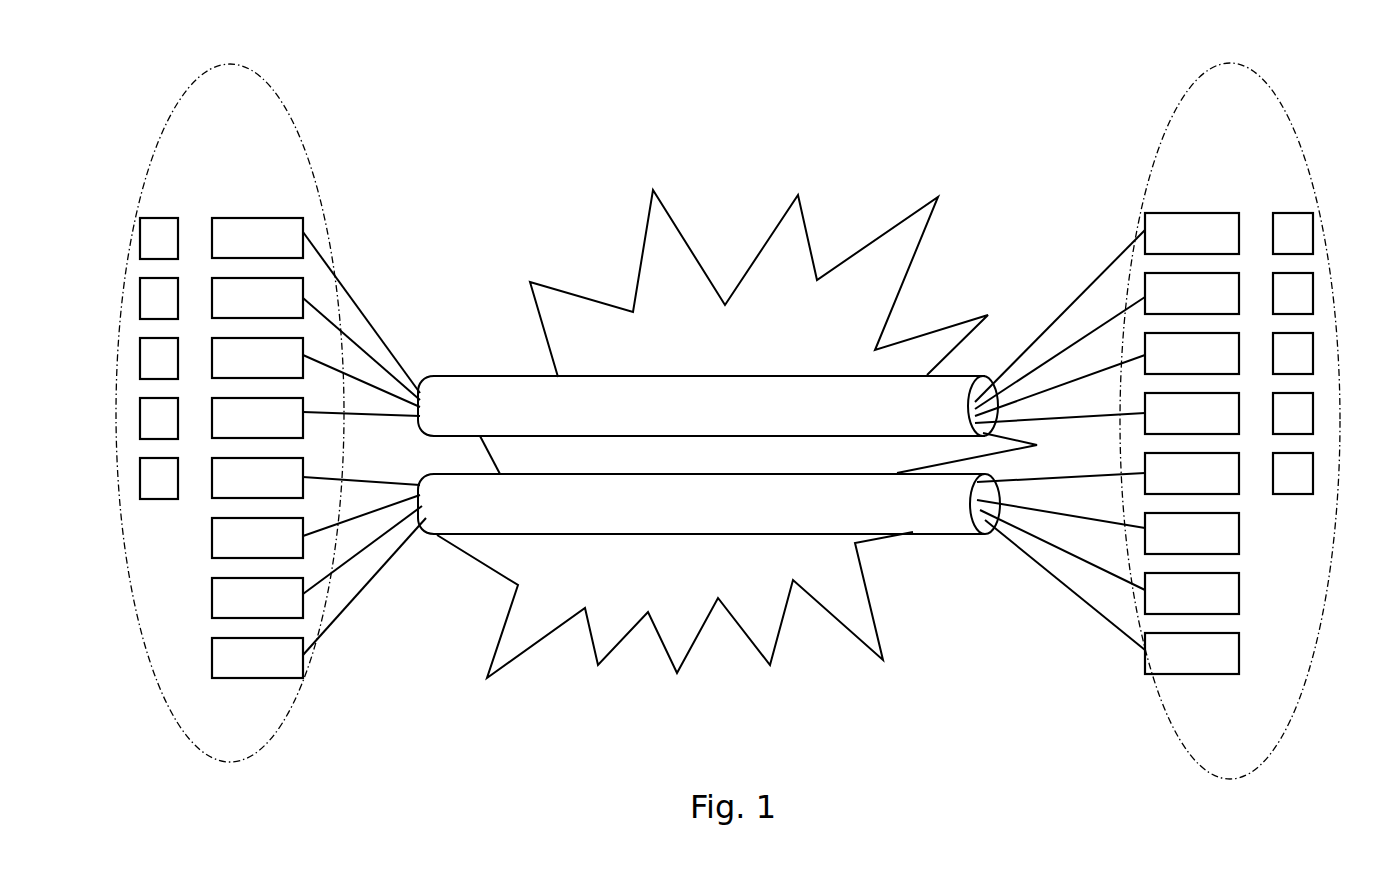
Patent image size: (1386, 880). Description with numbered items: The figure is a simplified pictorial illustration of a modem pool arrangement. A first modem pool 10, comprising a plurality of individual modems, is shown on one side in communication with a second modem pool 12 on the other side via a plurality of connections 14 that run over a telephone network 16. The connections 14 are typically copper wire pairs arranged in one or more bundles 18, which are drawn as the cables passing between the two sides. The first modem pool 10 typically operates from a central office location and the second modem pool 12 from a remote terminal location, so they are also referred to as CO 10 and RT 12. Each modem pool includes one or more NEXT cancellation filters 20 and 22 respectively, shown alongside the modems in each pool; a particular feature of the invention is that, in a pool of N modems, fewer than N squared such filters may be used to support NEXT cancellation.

The first modem pool 10 is at (266, 170).
The second modem pool 12 is at (1115, 757).
The connections 14 is at (372, 300).
The telephone network 16 is at (655, 240).
The bundles 18 is at (932, 520).
The NEXT cancellation filter 20 is at (172, 170).
The NEXT cancellation filter 22 is at (1269, 162).